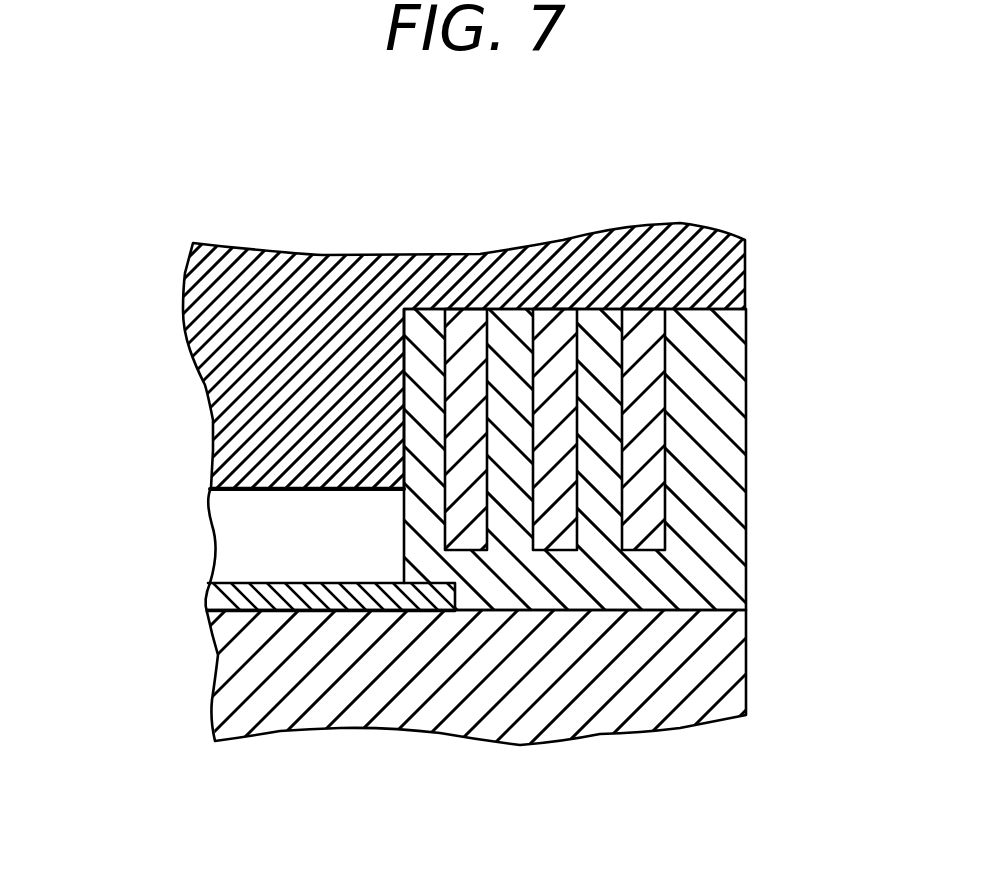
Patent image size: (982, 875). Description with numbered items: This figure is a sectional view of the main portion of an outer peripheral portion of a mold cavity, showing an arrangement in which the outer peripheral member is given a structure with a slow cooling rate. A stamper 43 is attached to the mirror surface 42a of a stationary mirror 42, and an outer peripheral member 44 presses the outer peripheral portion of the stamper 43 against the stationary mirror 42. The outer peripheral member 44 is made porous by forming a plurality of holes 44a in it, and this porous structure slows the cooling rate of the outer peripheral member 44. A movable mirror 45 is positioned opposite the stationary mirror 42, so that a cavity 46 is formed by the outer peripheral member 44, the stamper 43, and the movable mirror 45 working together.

The stationary mirror 42 is at (572, 733).
The mirror surface 42a is at (352, 600).
The stamper 43 is at (260, 597).
The outer peripheral member 44 is at (724, 508).
The holes 44a is at (660, 347).
The movable mirror 45 is at (324, 330).
The cavity 46 is at (262, 489).